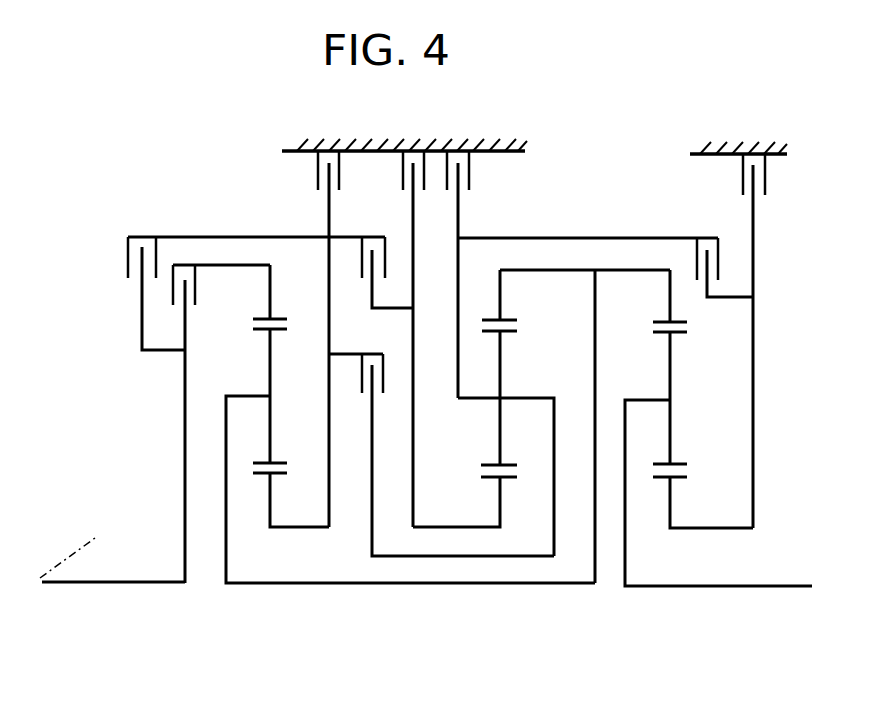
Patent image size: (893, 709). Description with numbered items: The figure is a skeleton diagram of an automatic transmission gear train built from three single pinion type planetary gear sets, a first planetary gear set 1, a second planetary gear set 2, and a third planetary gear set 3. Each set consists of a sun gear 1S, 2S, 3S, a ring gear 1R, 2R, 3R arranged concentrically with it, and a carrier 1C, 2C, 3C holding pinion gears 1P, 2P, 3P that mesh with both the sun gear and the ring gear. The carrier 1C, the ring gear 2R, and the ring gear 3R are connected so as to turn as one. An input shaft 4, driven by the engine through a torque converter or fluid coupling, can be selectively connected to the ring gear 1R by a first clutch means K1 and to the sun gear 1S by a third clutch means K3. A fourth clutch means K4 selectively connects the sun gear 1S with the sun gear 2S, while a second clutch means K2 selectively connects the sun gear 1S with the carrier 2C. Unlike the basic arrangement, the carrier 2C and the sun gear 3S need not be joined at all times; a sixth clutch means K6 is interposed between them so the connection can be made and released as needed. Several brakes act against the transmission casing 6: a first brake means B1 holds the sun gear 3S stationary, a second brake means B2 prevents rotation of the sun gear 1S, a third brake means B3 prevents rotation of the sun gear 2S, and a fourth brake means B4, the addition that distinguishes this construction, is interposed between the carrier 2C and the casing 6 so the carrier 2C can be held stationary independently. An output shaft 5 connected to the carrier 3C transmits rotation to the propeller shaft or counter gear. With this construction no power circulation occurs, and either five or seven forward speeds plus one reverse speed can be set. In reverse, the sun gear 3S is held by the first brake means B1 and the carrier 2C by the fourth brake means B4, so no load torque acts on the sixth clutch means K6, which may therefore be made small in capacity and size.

The first planetary gear set 1 is at (268, 540).
The second planetary gear set 2 is at (506, 534).
The third planetary gear set 3 is at (670, 548).
The input shaft 4 is at (91, 582).
The output shaft 5 is at (766, 585).
The transmission casing 6 is at (437, 150).
The ring gear of the first planetary gear set 1R is at (276, 320).
The carrier of the first planetary gear set 1C is at (254, 396).
The pinion gear of the first planetary gear set 1P is at (283, 463).
The sun gear of the first planetary gear set 1S is at (279, 475).
The ring gear of the second planetary gear set 2R is at (513, 320).
The carrier of the second planetary gear set 2C is at (519, 398).
The pinion gear of the second planetary gear set 2P is at (502, 465).
The sun gear of the second planetary gear set 2S is at (490, 481).
The ring gear of the third planetary gear set 3R is at (662, 320).
The carrier of the third planetary gear set 3C is at (642, 400).
The pinion gear of the third planetary gear set 3P is at (680, 334).
The sun gear of the third planetary gear set 3S is at (681, 478).
The first clutch means K1 is at (221, 408).
The second clutch means K2 is at (441, 438).
The third clutch means K3 is at (256, 277).
The fourth clutch means K4 is at (387, 257).
The sixth clutch means K6 is at (605, 251).
The first brake means B1 is at (777, 341).
The second brake means B2 is at (305, 339).
The third brake means B3 is at (395, 339).
The fourth brake means B4 is at (481, 274).